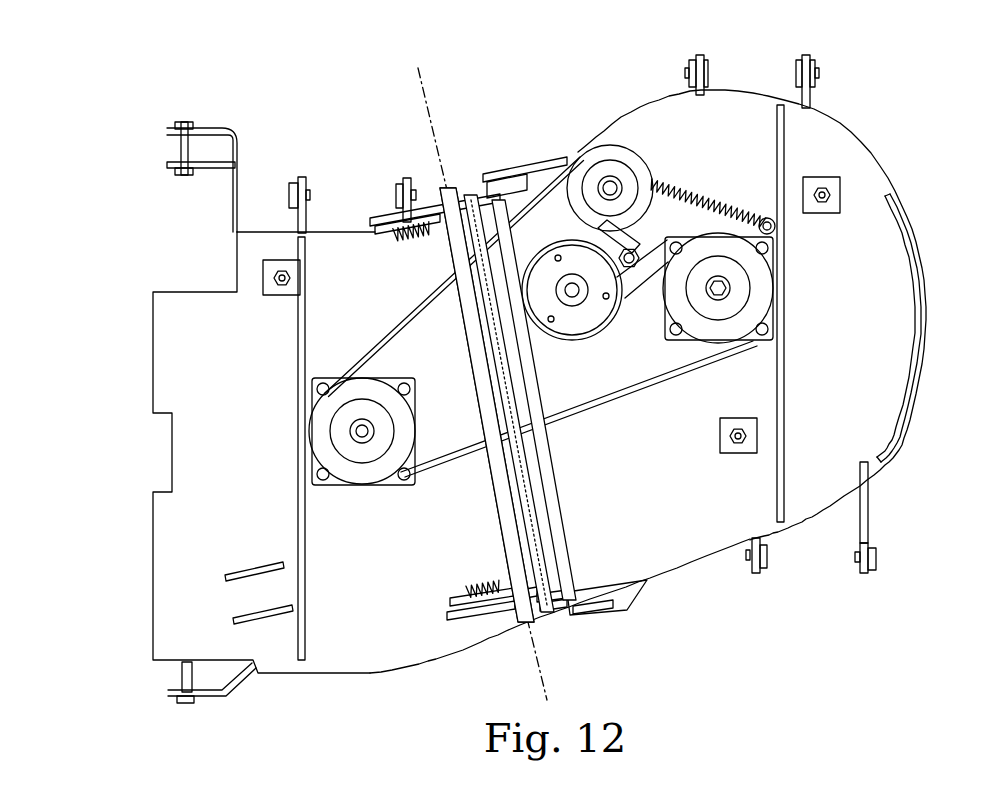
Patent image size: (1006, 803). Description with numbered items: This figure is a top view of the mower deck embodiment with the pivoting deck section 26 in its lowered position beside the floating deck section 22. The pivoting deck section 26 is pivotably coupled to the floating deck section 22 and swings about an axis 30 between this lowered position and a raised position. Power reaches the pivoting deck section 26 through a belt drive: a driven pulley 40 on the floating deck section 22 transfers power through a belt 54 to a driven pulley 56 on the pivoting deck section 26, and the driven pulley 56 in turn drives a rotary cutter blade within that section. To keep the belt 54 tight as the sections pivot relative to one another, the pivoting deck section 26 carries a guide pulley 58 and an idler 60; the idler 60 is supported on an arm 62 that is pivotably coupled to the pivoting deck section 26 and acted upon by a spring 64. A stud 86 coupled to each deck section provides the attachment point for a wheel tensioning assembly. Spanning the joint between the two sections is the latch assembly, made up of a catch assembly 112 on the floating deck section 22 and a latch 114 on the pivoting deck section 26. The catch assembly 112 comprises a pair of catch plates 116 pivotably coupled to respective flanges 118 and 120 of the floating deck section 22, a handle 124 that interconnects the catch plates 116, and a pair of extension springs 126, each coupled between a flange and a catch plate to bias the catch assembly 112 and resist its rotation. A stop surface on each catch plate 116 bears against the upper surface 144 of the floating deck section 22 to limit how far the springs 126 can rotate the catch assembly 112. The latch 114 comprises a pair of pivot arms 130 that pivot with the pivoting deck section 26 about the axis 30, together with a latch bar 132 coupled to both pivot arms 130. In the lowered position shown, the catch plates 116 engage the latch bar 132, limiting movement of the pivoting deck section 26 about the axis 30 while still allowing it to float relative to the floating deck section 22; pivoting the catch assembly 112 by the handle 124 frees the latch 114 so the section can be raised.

The floating deck section 22 is at (168, 255).
The pivoting deck section 26 is at (947, 242).
The axis 30 is at (433, 84).
The driven pulley 40 is at (350, 476).
The belt 54 is at (647, 383).
The driven pulley 56 is at (760, 289).
The guide pulley 58 is at (550, 262).
The idler 60 is at (594, 160).
The arm 62 is at (652, 228).
The spring 64 is at (717, 197).
The stud 86 is at (827, 180).
The catch assembly 112 is at (477, 485).
The latch 114 is at (577, 487).
The catch plates 116 is at (430, 214).
The flange 118 is at (403, 223).
The flange 120 is at (502, 597).
The handle 124 is at (507, 530).
The extension springs 126 is at (398, 226).
The pivot arms 130 is at (485, 188).
The latch bar 132 is at (543, 560).
The upper surface 144 is at (350, 594).